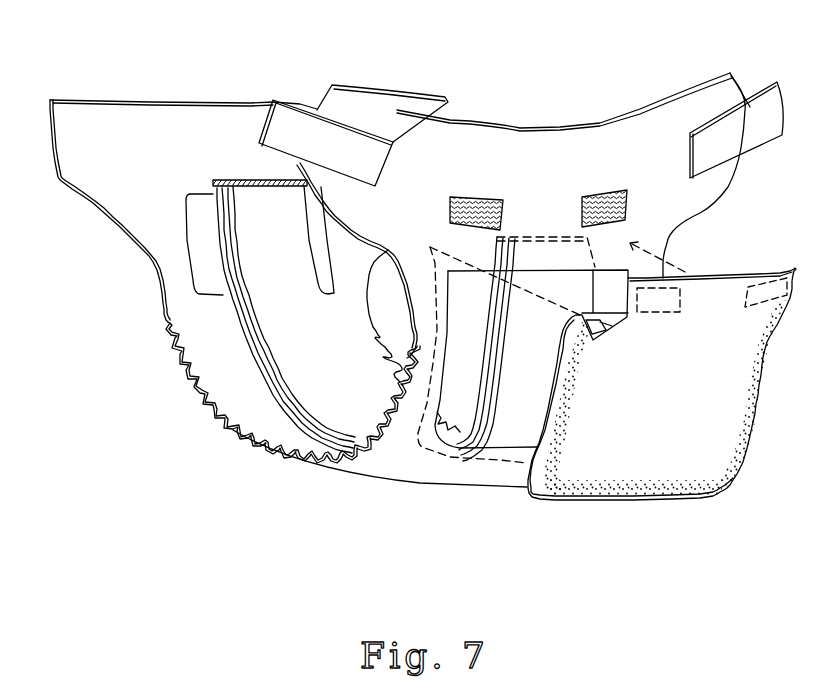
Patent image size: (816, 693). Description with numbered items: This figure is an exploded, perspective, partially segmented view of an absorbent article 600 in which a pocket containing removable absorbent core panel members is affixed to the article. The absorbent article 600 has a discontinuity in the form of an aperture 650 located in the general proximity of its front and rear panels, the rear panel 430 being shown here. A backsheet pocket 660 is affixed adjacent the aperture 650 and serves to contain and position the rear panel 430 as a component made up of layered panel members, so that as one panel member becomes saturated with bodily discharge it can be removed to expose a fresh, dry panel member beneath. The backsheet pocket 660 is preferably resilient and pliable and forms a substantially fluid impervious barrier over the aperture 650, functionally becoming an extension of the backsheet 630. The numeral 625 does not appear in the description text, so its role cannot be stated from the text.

The absorbent article 600 is at (228, 443).
The fastening landing zone 625 is at (473, 197).
The rear panel 430 is at (606, 296).
The backsheet 630 is at (663, 157).
The aperture 650 is at (203, 210).
The backsheet pocket 660 is at (672, 457).